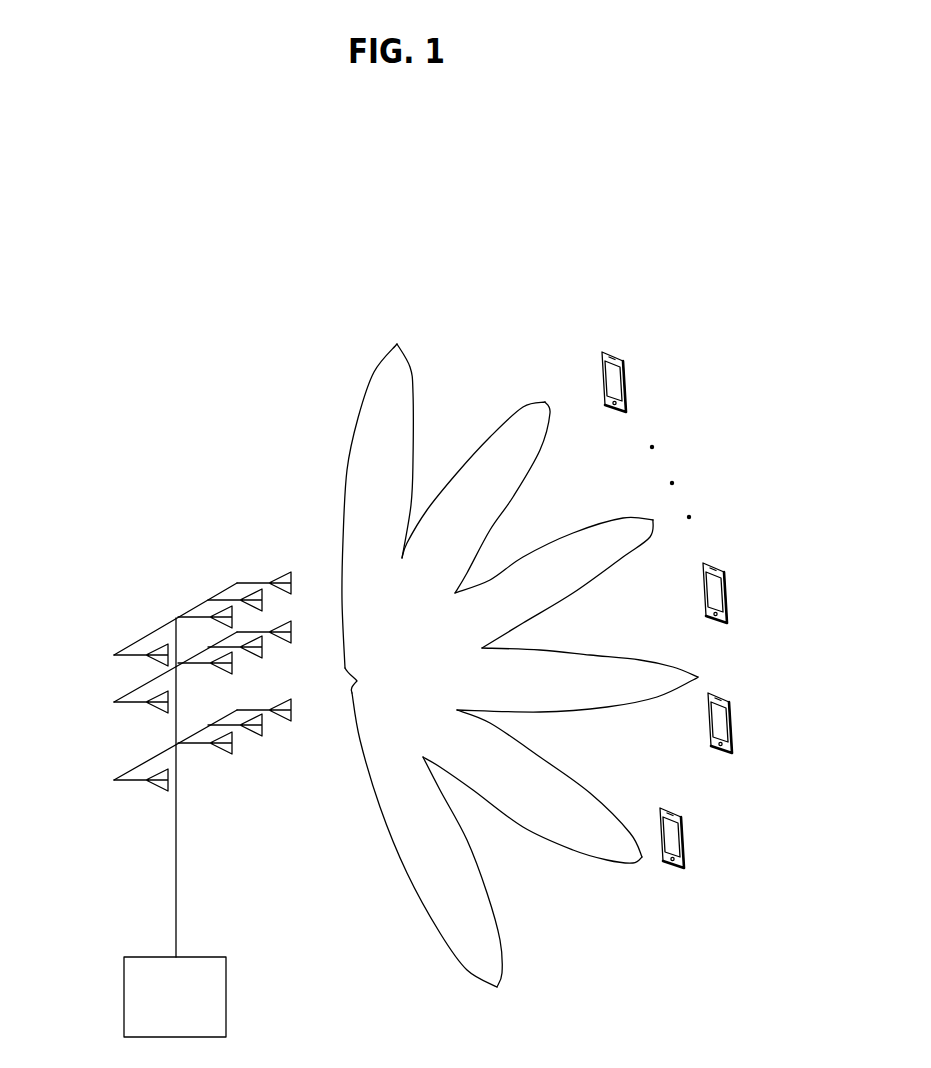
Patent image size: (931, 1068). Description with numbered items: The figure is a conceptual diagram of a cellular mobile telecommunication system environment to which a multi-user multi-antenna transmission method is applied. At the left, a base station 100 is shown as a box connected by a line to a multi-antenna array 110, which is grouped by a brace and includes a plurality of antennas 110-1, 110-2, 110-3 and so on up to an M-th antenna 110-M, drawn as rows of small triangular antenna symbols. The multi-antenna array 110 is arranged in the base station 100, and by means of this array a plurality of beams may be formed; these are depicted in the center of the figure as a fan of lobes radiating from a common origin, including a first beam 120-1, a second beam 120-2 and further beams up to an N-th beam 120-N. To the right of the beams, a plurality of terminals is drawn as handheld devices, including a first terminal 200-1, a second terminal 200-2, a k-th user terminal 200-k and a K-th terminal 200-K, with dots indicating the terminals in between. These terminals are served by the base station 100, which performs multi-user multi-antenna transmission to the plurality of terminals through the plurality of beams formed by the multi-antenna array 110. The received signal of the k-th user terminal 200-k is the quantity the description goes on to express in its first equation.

The base station 100 is at (129, 997).
The multi-antenna array 110 is at (162, 685).
The antenna 110-1 is at (278, 572).
The antenna 110-2 is at (248, 593).
The antenna 110-3 is at (220, 613).
The antenna 110-M is at (118, 803).
The beam 120-1 is at (403, 378).
The beam 120-2 is at (533, 443).
The beam 120-N is at (488, 942).
The terminal 200-1 is at (630, 373).
The terminal 200-2 is at (728, 588).
The k-th user terminal 200-k is at (733, 718).
The terminal 200-K is at (685, 832).